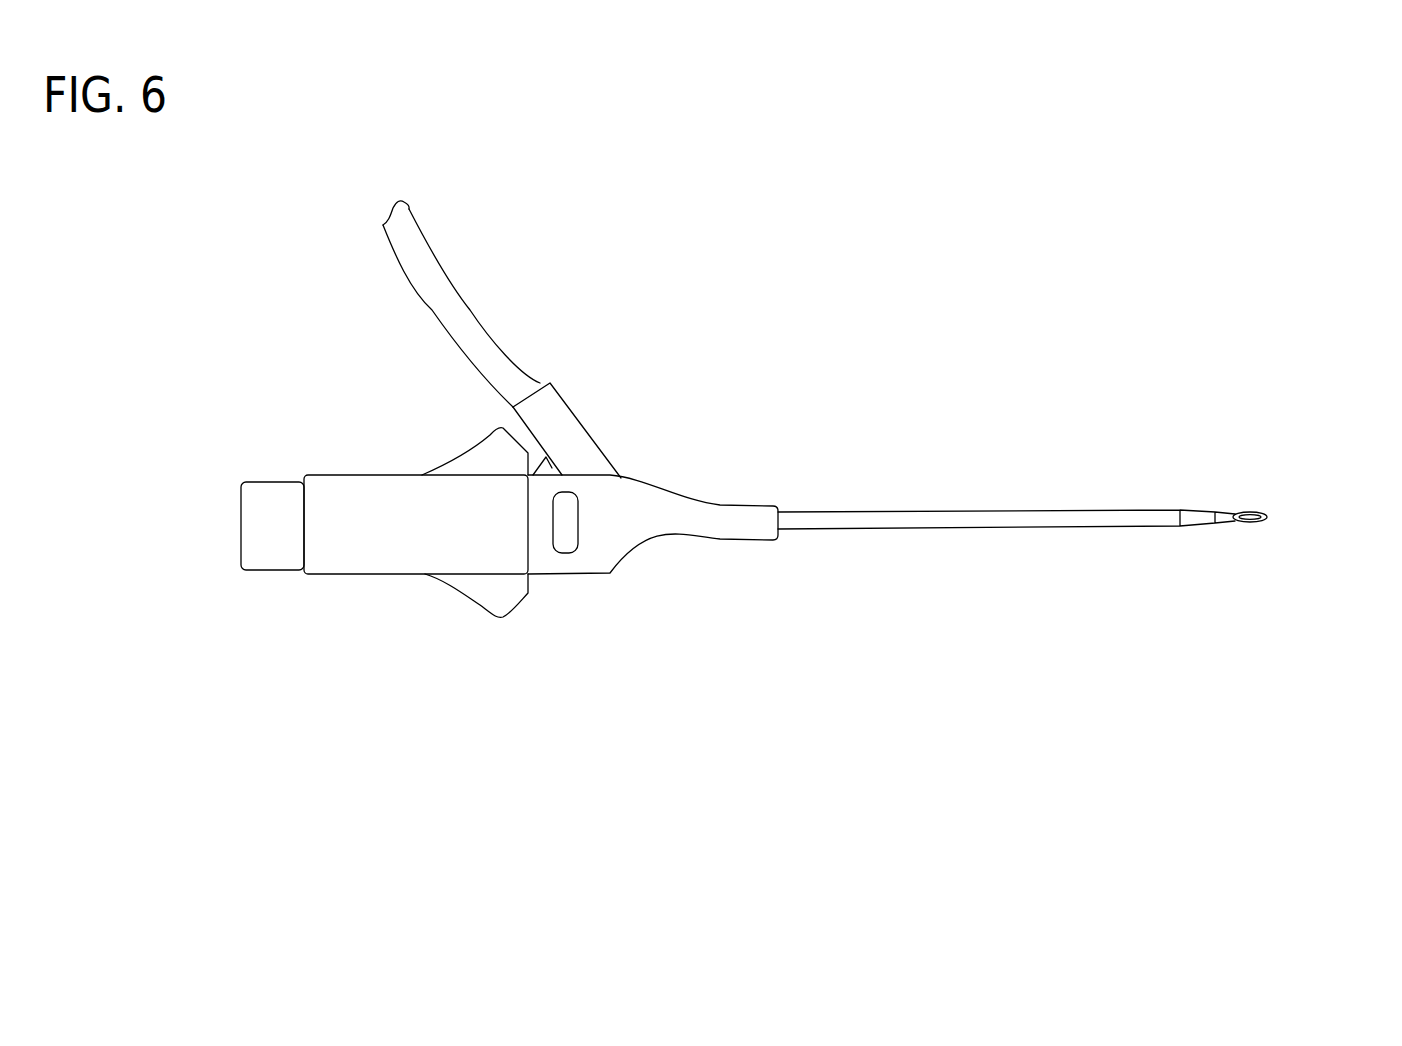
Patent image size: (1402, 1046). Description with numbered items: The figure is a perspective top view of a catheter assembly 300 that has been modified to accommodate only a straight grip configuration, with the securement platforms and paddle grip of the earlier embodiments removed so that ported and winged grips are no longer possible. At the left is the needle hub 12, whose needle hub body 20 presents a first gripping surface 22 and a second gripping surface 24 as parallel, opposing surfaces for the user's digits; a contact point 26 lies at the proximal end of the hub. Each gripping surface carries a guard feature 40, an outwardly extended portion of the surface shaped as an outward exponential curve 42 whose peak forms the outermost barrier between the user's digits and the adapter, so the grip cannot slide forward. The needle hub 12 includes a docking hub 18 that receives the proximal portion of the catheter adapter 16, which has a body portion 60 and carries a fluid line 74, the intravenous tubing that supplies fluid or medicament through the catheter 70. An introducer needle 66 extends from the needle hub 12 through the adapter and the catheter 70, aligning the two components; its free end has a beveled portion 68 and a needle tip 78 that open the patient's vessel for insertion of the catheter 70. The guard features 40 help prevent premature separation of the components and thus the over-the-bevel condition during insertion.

The needle hub 12 is at (482, 598).
The catheter adapter 16 is at (668, 540).
The docking hub 18 is at (530, 553).
The needle hub body 20 is at (353, 513).
The first gripping surface 22 is at (412, 475).
The second gripping surface 24 is at (410, 574).
The contact point 26 is at (241, 548).
The guard feature 40 is at (504, 441).
The exponential curve 42 is at (458, 457).
The body portion 60 is at (602, 490).
The introducer needle 66 is at (1223, 515).
The beveled portion 68 is at (1260, 508).
The catheter 70 is at (1090, 508).
The fluid line 74 is at (427, 265).
The needle tip 78 is at (1230, 525).
The catheter assembly 300 is at (1150, 708).